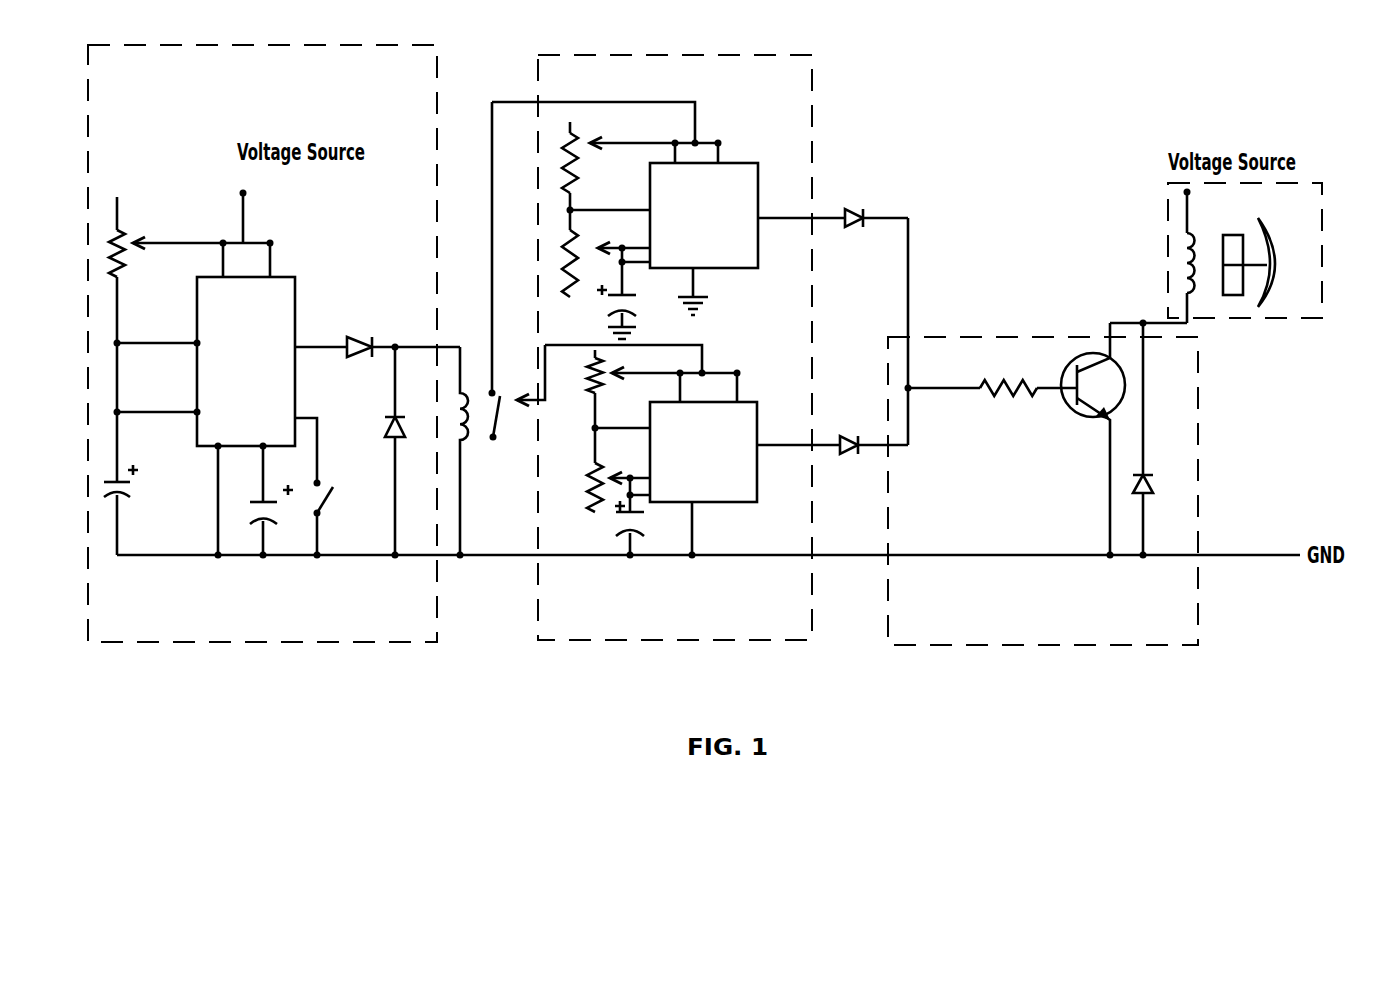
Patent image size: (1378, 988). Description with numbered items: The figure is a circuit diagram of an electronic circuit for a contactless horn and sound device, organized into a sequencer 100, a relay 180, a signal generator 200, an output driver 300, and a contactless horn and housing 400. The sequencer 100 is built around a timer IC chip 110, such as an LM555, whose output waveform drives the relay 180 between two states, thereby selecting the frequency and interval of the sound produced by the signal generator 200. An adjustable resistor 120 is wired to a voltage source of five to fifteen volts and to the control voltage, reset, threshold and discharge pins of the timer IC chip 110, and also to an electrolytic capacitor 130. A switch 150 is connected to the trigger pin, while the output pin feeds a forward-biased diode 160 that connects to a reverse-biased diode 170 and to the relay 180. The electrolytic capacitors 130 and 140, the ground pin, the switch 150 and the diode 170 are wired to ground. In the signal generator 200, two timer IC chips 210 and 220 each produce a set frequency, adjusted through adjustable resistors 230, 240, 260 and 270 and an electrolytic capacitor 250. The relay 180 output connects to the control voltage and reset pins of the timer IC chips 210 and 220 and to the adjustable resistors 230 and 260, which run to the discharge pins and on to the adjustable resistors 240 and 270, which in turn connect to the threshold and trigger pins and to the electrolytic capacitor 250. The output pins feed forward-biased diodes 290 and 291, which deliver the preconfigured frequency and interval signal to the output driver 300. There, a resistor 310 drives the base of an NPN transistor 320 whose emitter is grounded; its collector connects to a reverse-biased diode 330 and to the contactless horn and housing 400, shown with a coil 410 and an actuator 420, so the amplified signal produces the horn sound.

The sequencer 100 is at (262, 343).
The timer IC chip 110 is at (231, 374).
The adjustable resistor 120 is at (166, 233).
The electrolytic capacitor 130 is at (130, 500).
The electrolytic capacitor 140 is at (277, 522).
The switch 150 is at (339, 519).
The forward-biased diode 160 is at (401, 334).
The reverse-biased diode 170 is at (380, 451).
The relay 180 is at (501, 330).
The signal generator 200 is at (675, 347).
The timer IC chip 210 is at (706, 227).
The timer IC chip 220 is at (716, 466).
The adjustable resistor 230 is at (540, 166).
The adjustable resistor 240 is at (539, 253).
The electrolytic capacitor 250 is at (603, 312).
The adjustable resistor 260 is at (577, 389).
The adjustable resistor 270 is at (575, 470).
The forward-biased diode 290 is at (876, 203).
The forward-biased diode 291 is at (874, 476).
The output driver 300 is at (1043, 491).
The resistor 310 is at (992, 371).
The NPN transistor 320 is at (1091, 441).
The reverse-biased diode 330 is at (1162, 439).
The contactless horn and housing 400 is at (1245, 250).
The solenoid coil 410 is at (1167, 256).
The plunger / actuator 420 is at (1269, 264).